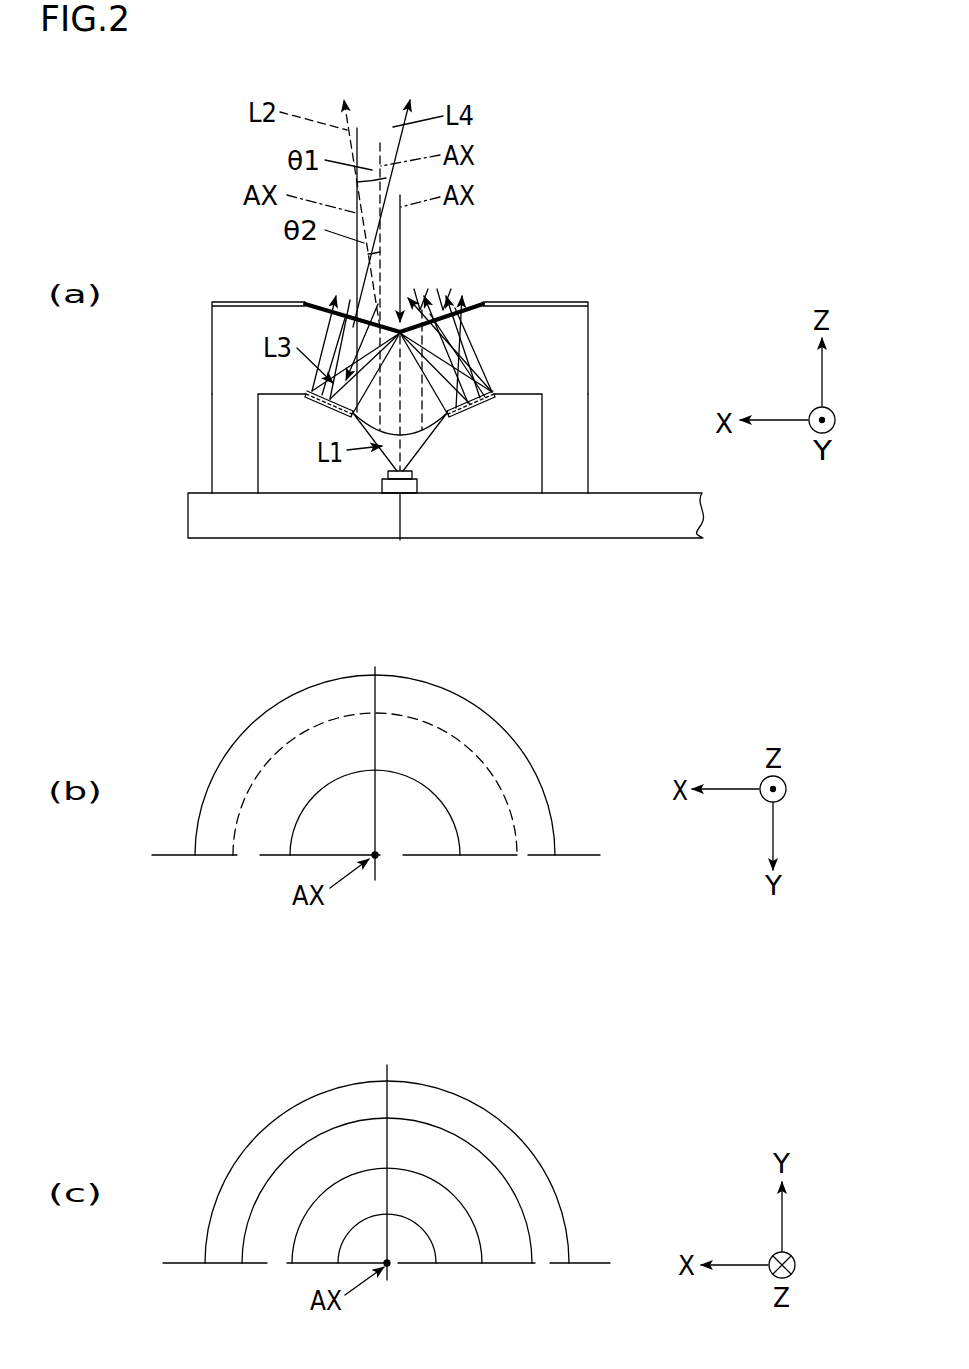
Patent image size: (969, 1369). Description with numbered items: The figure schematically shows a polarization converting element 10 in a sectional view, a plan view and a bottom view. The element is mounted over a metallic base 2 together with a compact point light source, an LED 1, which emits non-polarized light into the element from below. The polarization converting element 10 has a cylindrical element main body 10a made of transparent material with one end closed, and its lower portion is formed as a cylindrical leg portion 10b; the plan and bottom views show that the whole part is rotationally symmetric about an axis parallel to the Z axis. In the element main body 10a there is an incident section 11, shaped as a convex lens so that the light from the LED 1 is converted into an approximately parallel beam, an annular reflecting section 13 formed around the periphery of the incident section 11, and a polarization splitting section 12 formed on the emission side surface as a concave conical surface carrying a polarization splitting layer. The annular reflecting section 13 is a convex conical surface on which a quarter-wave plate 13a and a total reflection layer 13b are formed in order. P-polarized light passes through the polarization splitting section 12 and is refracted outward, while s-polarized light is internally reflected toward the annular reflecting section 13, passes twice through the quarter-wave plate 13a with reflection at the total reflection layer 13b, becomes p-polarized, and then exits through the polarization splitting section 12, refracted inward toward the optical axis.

The LED 1 is at (387, 485).
The metallic base 2 is at (703, 515).
The polarization converting element 10 is at (602, 294).
The element main body 10a is at (578, 355).
The cylindrical leg portion 10b is at (578, 468).
The incident section 11 is at (398, 436).
The polarization splitting section 12 is at (483, 304).
The annular reflecting section 13 is at (472, 403).
The quarter-wave plate 13a is at (310, 380).
The total reflection layer 13b is at (305, 407).